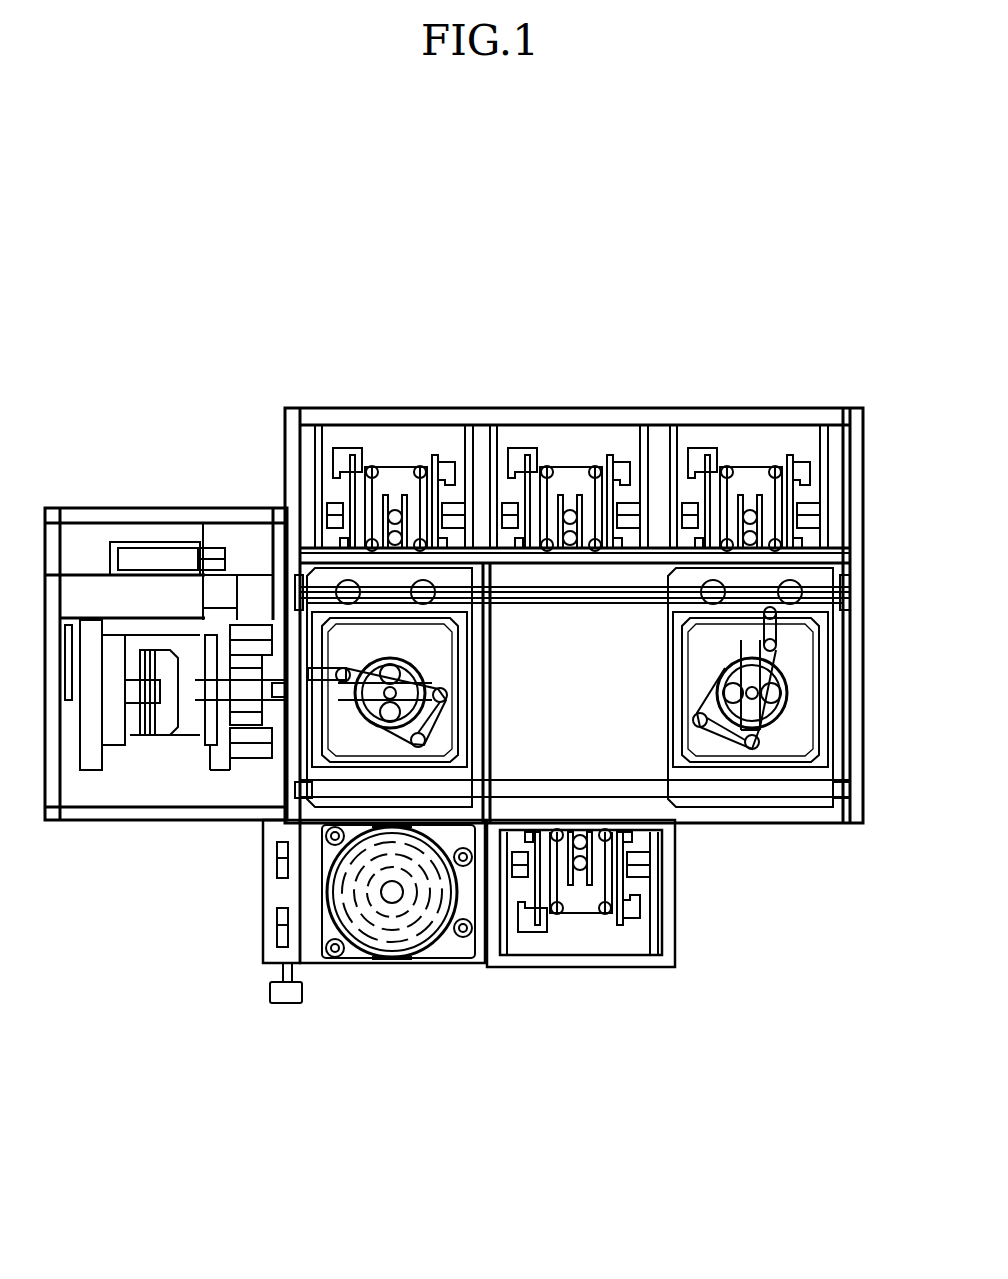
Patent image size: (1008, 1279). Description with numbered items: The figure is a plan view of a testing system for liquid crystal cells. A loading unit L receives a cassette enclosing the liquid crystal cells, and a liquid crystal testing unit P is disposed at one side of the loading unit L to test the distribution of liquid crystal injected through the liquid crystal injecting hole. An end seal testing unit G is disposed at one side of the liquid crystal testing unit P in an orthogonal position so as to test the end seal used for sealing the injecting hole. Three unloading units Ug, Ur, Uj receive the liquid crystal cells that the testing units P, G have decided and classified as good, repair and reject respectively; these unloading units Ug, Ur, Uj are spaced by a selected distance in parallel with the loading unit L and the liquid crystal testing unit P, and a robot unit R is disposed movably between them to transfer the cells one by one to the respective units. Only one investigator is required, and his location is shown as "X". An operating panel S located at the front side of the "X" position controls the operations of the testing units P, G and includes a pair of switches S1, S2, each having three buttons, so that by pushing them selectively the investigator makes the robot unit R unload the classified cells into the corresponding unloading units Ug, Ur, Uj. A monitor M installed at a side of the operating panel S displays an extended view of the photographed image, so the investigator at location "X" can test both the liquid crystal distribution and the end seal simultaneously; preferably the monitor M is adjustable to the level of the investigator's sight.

The unloading unit Ug is at (398, 398).
The unloading unit Ur is at (568, 398).
The unloading unit Uj is at (741, 398).
The robot unit R is at (848, 690).
The end seal testing unit G is at (90, 834).
The operating panel S is at (220, 891).
The switch S1 is at (283, 862).
The switch S2 is at (283, 929).
The investigator location X is at (243, 878).
The liquid crystal testing unit P is at (399, 992).
The monitor M is at (287, 1016).
The loading unit L is at (698, 902).